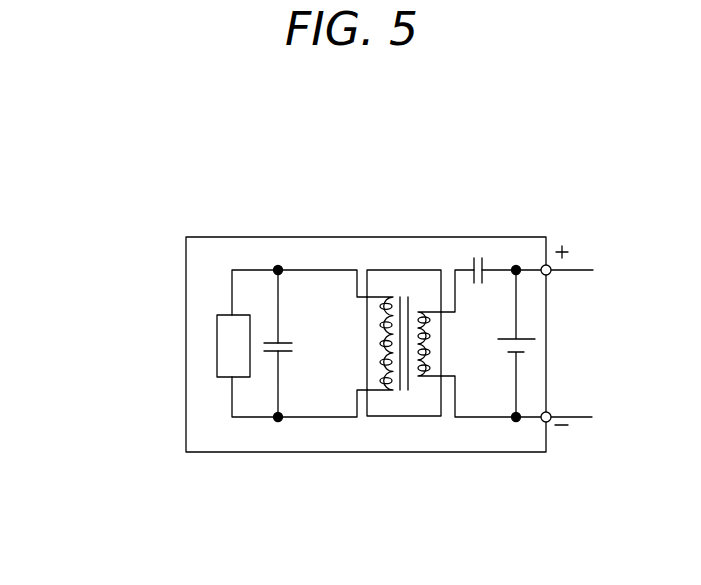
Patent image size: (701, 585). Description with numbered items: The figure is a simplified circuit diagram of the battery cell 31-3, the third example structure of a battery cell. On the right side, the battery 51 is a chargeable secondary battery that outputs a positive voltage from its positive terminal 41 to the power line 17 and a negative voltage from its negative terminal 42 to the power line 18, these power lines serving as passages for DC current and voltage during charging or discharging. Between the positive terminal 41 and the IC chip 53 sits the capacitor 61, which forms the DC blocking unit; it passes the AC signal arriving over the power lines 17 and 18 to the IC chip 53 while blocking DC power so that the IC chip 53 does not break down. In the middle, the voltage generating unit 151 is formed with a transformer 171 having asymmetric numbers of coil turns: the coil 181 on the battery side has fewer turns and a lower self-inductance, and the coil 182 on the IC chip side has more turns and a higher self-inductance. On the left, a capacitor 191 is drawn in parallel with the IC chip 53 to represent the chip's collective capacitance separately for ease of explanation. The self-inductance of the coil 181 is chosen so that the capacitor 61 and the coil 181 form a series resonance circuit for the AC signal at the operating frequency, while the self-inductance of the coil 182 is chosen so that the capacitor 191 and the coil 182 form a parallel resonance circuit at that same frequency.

The IC chip 53 is at (217, 343).
The capacitor 191 is at (292, 347).
The coil 182 is at (372, 313).
The voltage generating unit 151 is at (382, 270).
The transformer 171 is at (405, 290).
The coil 181 is at (442, 345).
The capacitor 61 is at (485, 262).
The battery 51 is at (523, 340).
The power line 17 is at (565, 268).
The positive terminal 41 is at (553, 274).
The negative terminal 42 is at (553, 412).
The power line 18 is at (573, 420).
The battery cell 31-3 is at (481, 453).